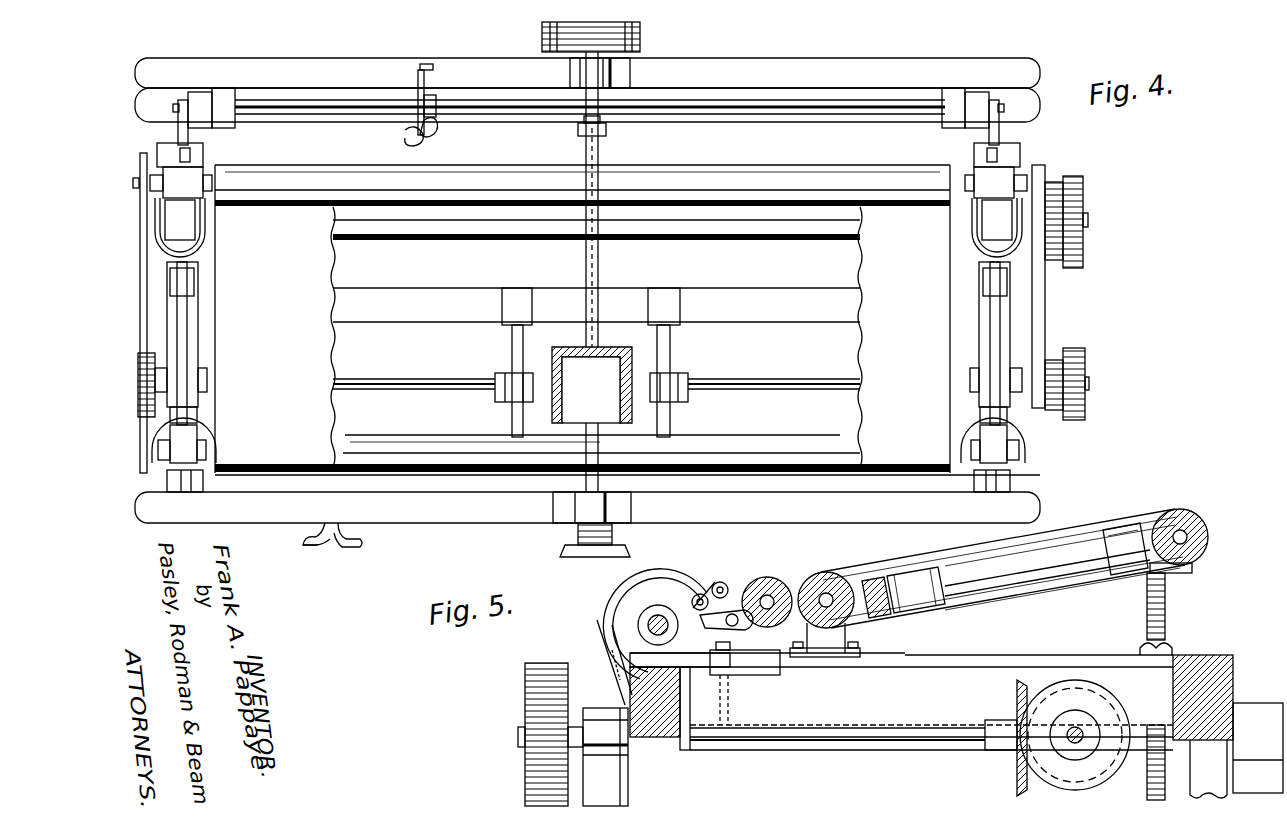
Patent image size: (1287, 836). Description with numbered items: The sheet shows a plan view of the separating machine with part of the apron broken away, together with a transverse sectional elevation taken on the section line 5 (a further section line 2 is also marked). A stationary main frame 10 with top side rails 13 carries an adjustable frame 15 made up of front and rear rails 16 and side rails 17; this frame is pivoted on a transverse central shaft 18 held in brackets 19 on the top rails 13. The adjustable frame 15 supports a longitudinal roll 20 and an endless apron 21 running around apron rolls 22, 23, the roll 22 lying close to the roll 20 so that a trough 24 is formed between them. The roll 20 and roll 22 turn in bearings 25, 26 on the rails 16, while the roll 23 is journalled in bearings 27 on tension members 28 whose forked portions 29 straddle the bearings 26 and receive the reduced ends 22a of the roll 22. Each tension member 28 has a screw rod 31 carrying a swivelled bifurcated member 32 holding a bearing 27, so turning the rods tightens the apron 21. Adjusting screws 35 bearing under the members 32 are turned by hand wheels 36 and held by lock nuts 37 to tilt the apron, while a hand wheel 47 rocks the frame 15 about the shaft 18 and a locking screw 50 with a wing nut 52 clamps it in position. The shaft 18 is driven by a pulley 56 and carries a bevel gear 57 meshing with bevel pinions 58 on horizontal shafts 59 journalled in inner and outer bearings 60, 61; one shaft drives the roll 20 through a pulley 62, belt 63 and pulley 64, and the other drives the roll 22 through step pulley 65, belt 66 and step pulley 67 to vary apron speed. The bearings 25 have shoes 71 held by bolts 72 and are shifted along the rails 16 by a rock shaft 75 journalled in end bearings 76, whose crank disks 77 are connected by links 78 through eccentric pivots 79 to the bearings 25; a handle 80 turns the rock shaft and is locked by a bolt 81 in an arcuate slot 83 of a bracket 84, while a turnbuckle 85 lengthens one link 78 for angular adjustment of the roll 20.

In FIG. 4, the section line 2 is at (148, 33).
In FIG. 4, the section line 5 is at (255, 35).
In FIG. 4, the stationary main frame 10 is at (454, 542).
In FIG. 5, the stationary main frame 10 is at (901, 727).
In FIG. 4, the top side rail 13 is at (587, 290).
In FIG. 5, the adjustable frame 15 is at (1039, 638).
In FIG. 4, the front and rear rail 16 is at (200, 324).
In FIG. 5, the front and rear rail 16 is at (931, 718).
In FIG. 4, the side rail 17 is at (627, 279).
In FIG. 5, the side rail 17 is at (665, 738).
In FIG. 4, the transverse central shaft 18 is at (585, 268).
In FIG. 5, the transverse central shaft 18 is at (875, 740).
In FIG. 4, the bracket 19 is at (612, 76).
In FIG. 5, the bracket 19 is at (933, 754).
In FIG. 4, the roll 20 is at (780, 172).
In FIG. 5, the roll 20 is at (752, 565).
In FIG. 4, the endless apron 21 is at (582, 319).
In FIG. 5, the endless apron 21 is at (1030, 543).
In FIG. 4, the apron roll 22 is at (768, 216).
In FIG. 5, the apron roll 22 is at (840, 585).
In FIG. 4, the reduced end of the roll 22a is at (588, 220).
In FIG. 5, the reduced end of the roll 22a is at (850, 618).
In FIG. 4, the apron roll 23 is at (582, 450).
In FIG. 5, the apron roll 23 is at (1200, 532).
In FIG. 4, the trough 24 is at (665, 205).
In FIG. 5, the trough 24 is at (845, 565).
In FIG. 4, the bearing 25 is at (208, 172).
In FIG. 5, the bearing 25 is at (761, 622).
In FIG. 4, the bearing 26 is at (200, 222).
In FIG. 5, the bearing 26 is at (828, 632).
In FIG. 4, the bearing 27 is at (195, 485).
In FIG. 4, the tension member 28 is at (1003, 398).
In FIG. 5, the tension member 28 is at (1062, 589).
In FIG. 4, the forked portion 29 is at (207, 246).
In FIG. 5, the forked portion 29 is at (898, 592).
In FIG. 4, the screw rod 31 is at (187, 350).
In FIG. 5, the screw rod 31 is at (1068, 543).
In FIG. 4, the bifurcated member 32 is at (195, 446).
In FIG. 5, the bifurcated member 32 is at (1125, 527).
In FIG. 5, the adjusting screw 35 is at (1166, 600).
In FIG. 4, the hand wheel 36 is at (212, 432).
In FIG. 5, the lock nut 37 is at (1138, 650).
In FIG. 4, the hand wheel 47 is at (565, 553).
In FIG. 4, the locking screw 50 is at (325, 548).
In FIG. 4, the wing nut 52 is at (352, 548).
In FIG. 4, the pulley 56 is at (642, 38).
In FIG. 5, the pulley 56 is at (525, 685).
In FIG. 4, the bevel gear 57 is at (600, 345).
In FIG. 5, the bevel gear 57 is at (1012, 766).
In FIG. 4, the bevel pinion 58 is at (548, 365).
In FIG. 5, the bevel pinion 58 is at (1107, 692).
In FIG. 4, the horizontal shaft 59 is at (420, 378).
In FIG. 5, the horizontal shaft 59 is at (1068, 745).
In FIG. 4, the inner bearing 60 is at (512, 410).
In FIG. 4, the outer bearing 61 is at (207, 380).
In FIG. 4, the pulley 62 is at (200, 412).
In FIG. 4, the belt 63 is at (165, 310).
In FIG. 4, the pulley 64 is at (588, 182).
In FIG. 4, the step pulley 65 is at (1068, 372).
In FIG. 4, the belt 66 is at (1042, 303).
In FIG. 4, the step pulley 67 is at (1058, 182).
In FIG. 4, the shoe 71 is at (975, 150).
In FIG. 5, the shoe 71 is at (745, 683).
In FIG. 5, the bolt 72 is at (720, 640).
In FIG. 4, the rock shaft 75 is at (345, 100).
In FIG. 5, the rock shaft 75 is at (650, 622).
In FIG. 4, the end bearing 76 is at (222, 98).
In FIG. 5, the end bearing 76 is at (608, 645).
In FIG. 4, the crank disk 77 is at (200, 100).
In FIG. 4, the link 78 is at (180, 122).
In FIG. 4, the pivot 79 is at (176, 106).
In FIG. 4, the handle 80 is at (435, 135).
In FIG. 5, the handle 80 is at (697, 593).
In FIG. 4, the bolt 81 is at (408, 136).
In FIG. 5, the bolt 81 is at (722, 582).
In FIG. 5, the arcuate slot 83 is at (660, 577).
In FIG. 4, the bracket 84 is at (418, 85).
In FIG. 5, the bracket 84 is at (612, 595).
In FIG. 4, the turnbuckle 85 is at (245, 88).